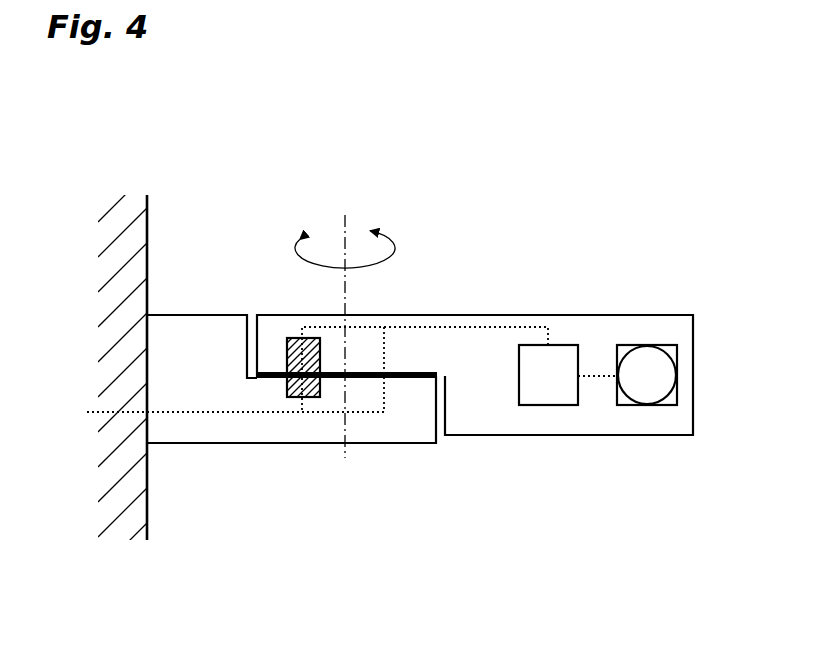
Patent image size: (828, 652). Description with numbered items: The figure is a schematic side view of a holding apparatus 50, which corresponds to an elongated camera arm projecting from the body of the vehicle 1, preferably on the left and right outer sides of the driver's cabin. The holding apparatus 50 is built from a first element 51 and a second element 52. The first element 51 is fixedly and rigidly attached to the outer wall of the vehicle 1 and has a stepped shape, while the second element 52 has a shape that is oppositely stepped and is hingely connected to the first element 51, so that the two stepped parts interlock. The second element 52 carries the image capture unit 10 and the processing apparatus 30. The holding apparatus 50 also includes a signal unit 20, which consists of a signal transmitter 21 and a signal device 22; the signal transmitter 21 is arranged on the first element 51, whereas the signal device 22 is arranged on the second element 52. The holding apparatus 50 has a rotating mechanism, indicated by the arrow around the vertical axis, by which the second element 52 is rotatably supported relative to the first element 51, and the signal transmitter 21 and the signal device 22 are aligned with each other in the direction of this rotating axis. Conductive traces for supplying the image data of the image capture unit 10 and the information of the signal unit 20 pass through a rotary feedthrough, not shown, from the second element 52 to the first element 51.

The vehicle 1 is at (107, 263).
The image capture unit 10 is at (648, 365).
The signal unit 20 is at (353, 312).
The signal transmitter 21 is at (293, 392).
The signal device 22 is at (302, 357).
The processing apparatus 30 is at (553, 367).
The holding apparatus 50 is at (420, 334).
The first element 51 is at (190, 443).
The second element 52 is at (497, 416).